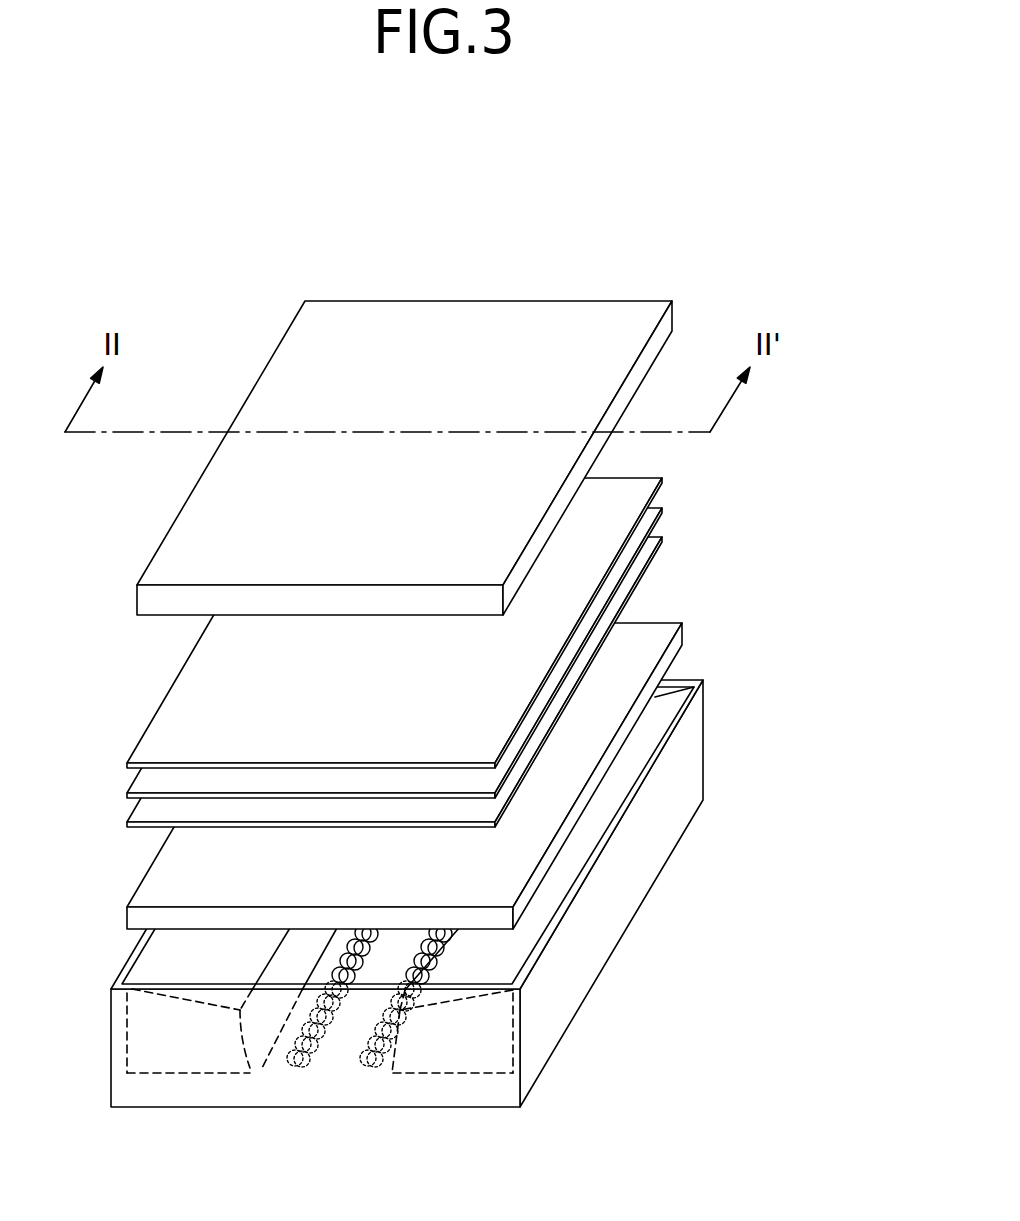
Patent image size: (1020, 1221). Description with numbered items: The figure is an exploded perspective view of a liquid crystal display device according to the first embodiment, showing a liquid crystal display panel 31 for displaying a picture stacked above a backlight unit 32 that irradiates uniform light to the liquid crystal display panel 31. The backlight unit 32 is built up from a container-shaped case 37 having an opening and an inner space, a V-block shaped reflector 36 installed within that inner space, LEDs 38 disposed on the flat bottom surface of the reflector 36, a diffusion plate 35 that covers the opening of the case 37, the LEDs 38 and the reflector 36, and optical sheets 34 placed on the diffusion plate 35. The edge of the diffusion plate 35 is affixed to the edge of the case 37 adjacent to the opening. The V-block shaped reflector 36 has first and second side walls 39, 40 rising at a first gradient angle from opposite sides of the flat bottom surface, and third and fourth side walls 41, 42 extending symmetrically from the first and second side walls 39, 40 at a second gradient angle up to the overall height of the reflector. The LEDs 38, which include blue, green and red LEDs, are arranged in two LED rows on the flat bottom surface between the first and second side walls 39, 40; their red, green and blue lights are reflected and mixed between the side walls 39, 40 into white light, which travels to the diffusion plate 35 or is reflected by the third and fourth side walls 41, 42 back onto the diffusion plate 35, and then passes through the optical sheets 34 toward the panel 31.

The liquid crystal display panel 31 is at (660, 332).
The backlight unit 32 is at (471, 827).
The optical sheets 34 is at (432, 650).
The diffusion plate 35 is at (682, 627).
The V-block shaped reflector 36 is at (467, 1042).
The case 37 is at (635, 860).
The LEDs 38 is at (370, 1063).
The first side wall 39 is at (398, 1047).
The second side wall 40 is at (243, 1023).
The third side wall 41 is at (187, 968).
The fourth side wall 42 is at (483, 970).